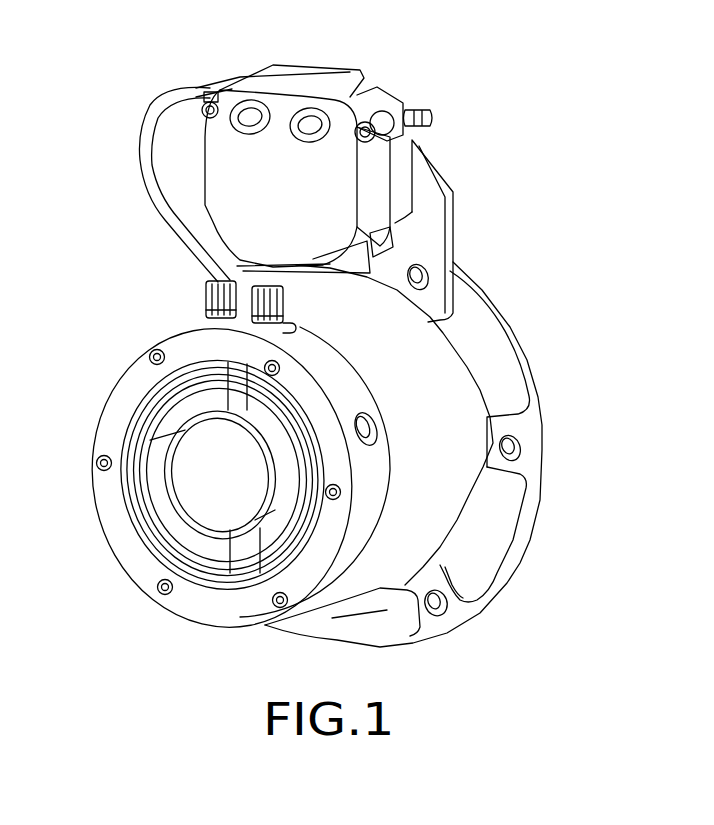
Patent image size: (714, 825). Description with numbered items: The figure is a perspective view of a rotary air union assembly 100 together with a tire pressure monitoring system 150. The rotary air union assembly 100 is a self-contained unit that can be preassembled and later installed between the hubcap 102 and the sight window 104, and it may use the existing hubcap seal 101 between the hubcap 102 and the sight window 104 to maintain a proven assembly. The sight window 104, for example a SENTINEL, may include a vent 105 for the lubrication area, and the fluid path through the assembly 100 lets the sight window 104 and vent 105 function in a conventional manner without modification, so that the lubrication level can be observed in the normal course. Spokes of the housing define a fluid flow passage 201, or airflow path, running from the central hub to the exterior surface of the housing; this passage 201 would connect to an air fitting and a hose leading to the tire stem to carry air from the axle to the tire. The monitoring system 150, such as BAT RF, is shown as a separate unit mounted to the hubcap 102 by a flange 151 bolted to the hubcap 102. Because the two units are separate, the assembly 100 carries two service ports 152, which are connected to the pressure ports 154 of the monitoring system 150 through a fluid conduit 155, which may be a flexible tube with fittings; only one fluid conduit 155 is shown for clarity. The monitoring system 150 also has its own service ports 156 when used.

The rotary air union assembly 100 is at (380, 518).
The hubcap seal 101 is at (138, 415).
The hubcap 102 is at (460, 423).
The sight window 104 is at (168, 508).
The vent 105 is at (208, 492).
The tire pressure monitoring system 150 is at (402, 170).
The flange 151 is at (465, 220).
The service ports 152 is at (203, 298).
The pressure ports 154 is at (214, 88).
The fluid conduit 155 is at (150, 102).
The service ports 156 is at (363, 108).
The fluid flow passage 201 is at (377, 423).